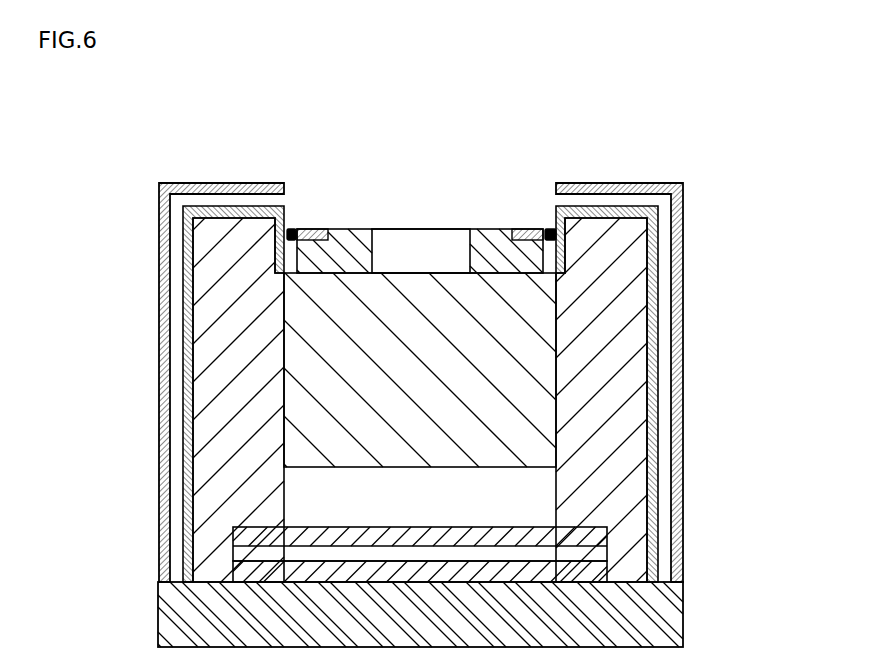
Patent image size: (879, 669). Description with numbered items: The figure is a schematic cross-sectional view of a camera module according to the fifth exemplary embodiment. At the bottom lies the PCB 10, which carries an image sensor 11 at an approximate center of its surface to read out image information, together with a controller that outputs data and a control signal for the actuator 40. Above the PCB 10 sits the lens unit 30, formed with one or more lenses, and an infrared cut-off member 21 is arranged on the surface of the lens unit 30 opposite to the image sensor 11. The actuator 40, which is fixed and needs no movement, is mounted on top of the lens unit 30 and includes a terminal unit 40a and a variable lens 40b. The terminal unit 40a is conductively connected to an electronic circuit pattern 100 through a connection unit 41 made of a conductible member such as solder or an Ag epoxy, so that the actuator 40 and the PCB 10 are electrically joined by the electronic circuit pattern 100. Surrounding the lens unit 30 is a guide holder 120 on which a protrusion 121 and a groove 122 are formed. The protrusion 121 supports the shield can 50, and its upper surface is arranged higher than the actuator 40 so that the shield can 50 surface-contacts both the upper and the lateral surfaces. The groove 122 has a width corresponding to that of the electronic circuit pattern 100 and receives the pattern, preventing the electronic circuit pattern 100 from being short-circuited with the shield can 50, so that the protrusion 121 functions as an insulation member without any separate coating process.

The PCB 10 is at (673, 615).
The image sensor 11 is at (583, 570).
The infrared cut-off member 21 is at (580, 530).
The lens unit 30 is at (532, 357).
The actuator 40 is at (420, 191).
The terminal unit 40a is at (447, 157).
The variable lens 40b is at (427, 242).
The connection unit 41 is at (547, 230).
The shield can 50 is at (620, 183).
The electronic circuit pattern 100 is at (380, 346).
The guide holder 120 is at (173, 346).
The protrusion 121 is at (170, 232).
The groove 122 is at (236, 218).